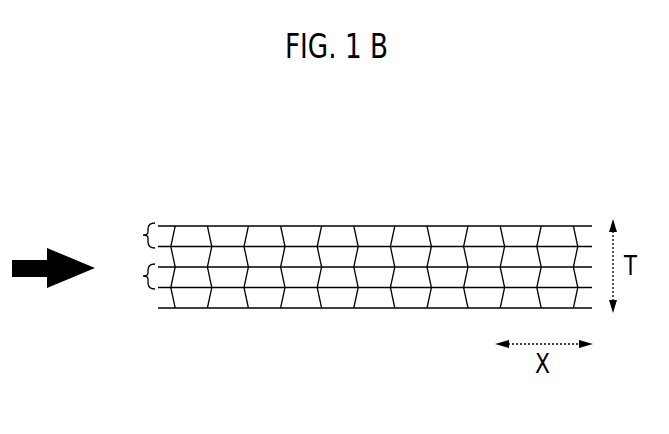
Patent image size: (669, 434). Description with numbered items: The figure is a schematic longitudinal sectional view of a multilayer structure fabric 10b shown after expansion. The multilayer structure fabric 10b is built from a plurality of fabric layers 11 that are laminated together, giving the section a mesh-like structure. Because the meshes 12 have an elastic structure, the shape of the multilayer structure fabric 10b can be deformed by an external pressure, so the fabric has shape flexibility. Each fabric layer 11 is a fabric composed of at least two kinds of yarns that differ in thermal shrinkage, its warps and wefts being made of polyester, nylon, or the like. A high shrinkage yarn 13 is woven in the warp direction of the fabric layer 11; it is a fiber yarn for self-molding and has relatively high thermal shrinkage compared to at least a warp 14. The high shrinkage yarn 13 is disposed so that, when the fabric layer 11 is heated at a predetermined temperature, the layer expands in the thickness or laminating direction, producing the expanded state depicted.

The multilayer structure fabric 10b is at (201, 167).
The fabric layer 11 is at (141, 235).
The mesh 12 is at (519, 232).
The high shrinkage yarn 13 is at (357, 226).
The warp 14 is at (268, 308).